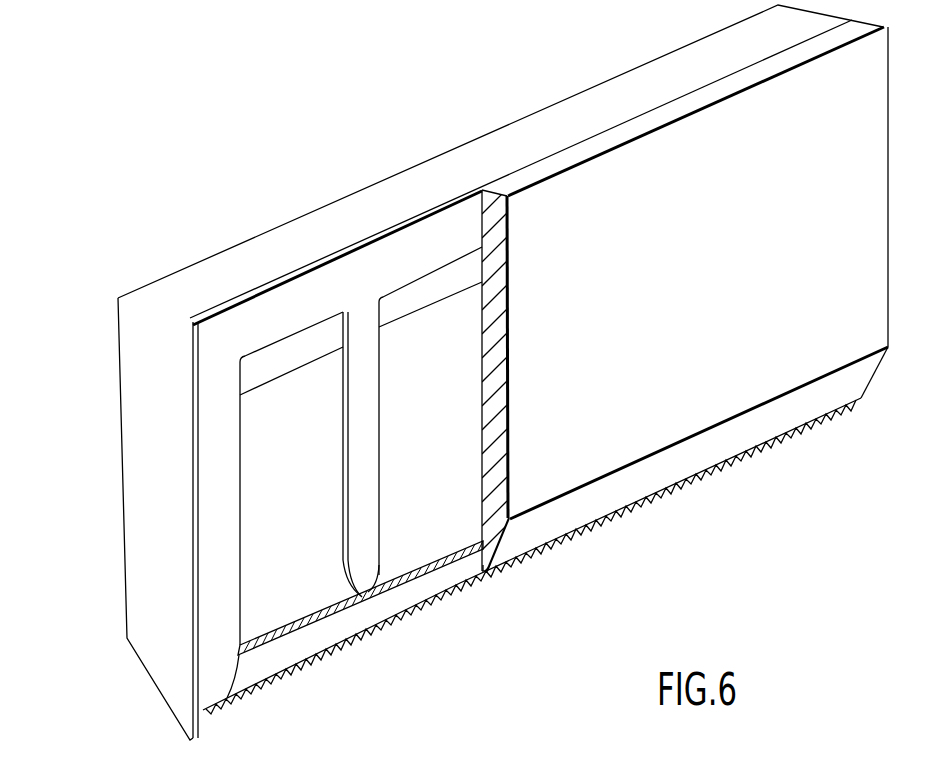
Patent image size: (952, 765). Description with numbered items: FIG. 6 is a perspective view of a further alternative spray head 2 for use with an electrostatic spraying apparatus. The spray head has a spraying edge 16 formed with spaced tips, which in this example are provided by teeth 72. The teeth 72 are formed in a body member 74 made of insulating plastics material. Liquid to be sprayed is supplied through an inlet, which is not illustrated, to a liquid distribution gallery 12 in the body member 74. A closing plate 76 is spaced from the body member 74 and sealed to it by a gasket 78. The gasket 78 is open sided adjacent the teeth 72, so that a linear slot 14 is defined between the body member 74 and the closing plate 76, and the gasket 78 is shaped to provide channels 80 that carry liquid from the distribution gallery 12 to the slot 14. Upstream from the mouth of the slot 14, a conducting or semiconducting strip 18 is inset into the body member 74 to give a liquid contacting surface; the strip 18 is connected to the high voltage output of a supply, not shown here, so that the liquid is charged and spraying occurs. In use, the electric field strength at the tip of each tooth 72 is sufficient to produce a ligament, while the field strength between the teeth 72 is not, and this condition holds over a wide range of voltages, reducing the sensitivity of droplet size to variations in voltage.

The container 2 is at (158, 675).
The liquid distribution gallery 12 is at (470, 272).
The linear slot 14 is at (497, 568).
The spraying edge 16 is at (430, 628).
The conducting or semiconducting strip 18 is at (428, 565).
The teeth 72 is at (330, 670).
The body member 74 is at (135, 587).
The closing plate 76 is at (877, 188).
The gasket 78 is at (362, 307).
The channels 80 is at (350, 473).